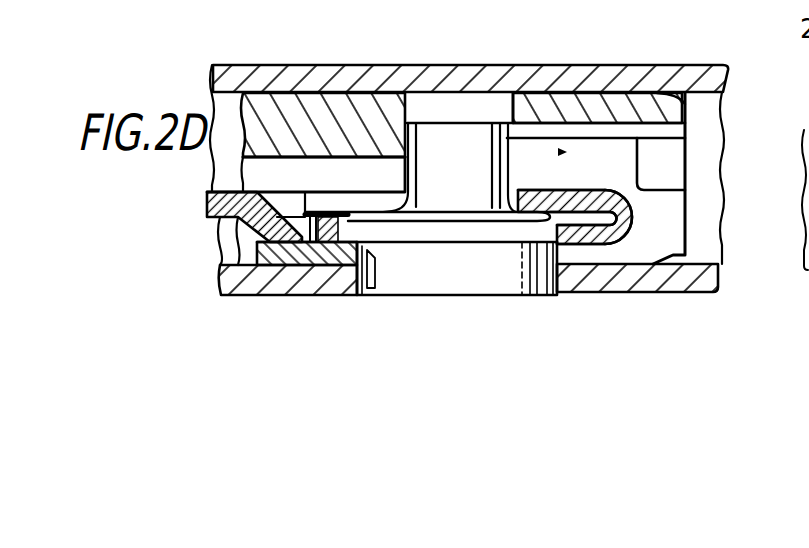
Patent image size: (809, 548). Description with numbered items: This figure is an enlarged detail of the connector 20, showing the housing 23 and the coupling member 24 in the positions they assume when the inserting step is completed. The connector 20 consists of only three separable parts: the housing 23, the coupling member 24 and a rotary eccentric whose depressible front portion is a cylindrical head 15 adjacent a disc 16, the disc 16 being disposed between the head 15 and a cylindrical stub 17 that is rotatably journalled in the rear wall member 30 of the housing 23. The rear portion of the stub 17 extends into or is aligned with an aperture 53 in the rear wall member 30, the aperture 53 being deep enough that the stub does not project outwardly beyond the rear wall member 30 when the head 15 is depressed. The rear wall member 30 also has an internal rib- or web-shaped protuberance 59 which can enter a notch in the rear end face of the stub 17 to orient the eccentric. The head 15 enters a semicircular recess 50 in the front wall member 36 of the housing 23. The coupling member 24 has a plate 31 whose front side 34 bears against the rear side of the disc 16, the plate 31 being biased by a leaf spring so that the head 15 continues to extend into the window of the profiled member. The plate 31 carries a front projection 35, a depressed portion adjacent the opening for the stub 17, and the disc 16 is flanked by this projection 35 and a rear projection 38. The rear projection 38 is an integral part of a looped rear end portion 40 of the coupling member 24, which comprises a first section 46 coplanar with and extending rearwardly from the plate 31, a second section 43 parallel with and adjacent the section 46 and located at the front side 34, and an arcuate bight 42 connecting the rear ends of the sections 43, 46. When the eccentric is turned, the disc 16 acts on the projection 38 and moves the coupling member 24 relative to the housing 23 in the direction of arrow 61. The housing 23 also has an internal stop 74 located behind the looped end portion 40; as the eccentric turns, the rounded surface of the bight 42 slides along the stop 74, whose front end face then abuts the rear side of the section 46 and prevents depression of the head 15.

The head 15 is at (438, 278).
The disc 16 is at (378, 228).
The stub 17 is at (463, 150).
The connector 20 is at (723, 108).
The housing 23 is at (213, 105).
The coupling member 24 is at (212, 216).
The rear wall member 30 is at (584, 112).
The plate 31 is at (205, 202).
The front side 34 is at (347, 214).
The projection 35 is at (286, 258).
The front wall member 36 is at (265, 258).
The projection 38 is at (575, 248).
The looped rear end portion 40 is at (687, 354).
The bight 42 is at (634, 216).
The second section 43 is at (598, 236).
The first section 46 is at (592, 197).
The recess 50 is at (371, 287).
The aperture 53 is at (486, 100).
The protuberance 59 is at (618, 128).
The arrow 61 is at (559, 152).
The stop 74 is at (650, 188).